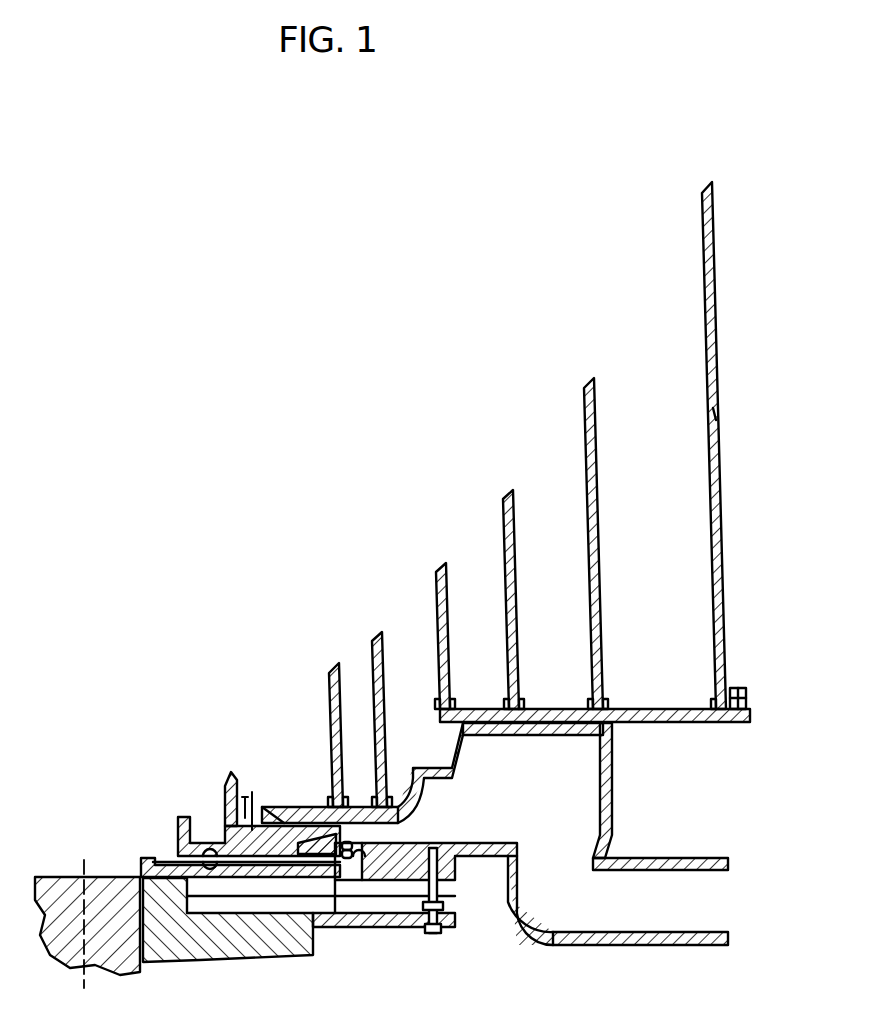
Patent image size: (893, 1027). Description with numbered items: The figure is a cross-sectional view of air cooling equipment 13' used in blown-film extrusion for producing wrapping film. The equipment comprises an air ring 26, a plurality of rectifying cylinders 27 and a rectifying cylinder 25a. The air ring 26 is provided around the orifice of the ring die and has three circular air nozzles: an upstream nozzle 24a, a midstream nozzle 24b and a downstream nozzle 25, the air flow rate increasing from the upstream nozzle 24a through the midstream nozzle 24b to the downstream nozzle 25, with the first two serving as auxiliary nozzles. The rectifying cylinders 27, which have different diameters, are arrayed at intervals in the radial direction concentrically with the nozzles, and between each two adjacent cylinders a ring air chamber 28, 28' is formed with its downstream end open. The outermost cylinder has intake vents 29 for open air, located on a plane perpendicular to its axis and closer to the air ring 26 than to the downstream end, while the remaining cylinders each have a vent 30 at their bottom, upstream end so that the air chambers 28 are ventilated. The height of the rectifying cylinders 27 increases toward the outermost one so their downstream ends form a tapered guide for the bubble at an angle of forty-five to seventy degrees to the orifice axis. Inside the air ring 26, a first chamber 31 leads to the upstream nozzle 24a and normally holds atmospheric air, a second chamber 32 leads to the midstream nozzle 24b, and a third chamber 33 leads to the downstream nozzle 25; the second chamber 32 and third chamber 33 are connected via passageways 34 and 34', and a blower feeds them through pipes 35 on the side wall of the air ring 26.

The air cooling equipment 13' is at (387, 412).
The upstream nozzle 24a is at (150, 872).
The midstream nozzle 24b is at (155, 860).
The downstream nozzle 25 is at (258, 800).
The rectifying cylinder 25a is at (229, 776).
The air ring 26 is at (482, 858).
The rectifying cylinders 27 is at (337, 662).
The ring air chamber 28 is at (591, 592).
The ring air chamber 28' is at (300, 767).
The intake vents 29 is at (714, 414).
The vent 30 is at (612, 697).
The first chamber 31 is at (236, 897).
The second chamber 32 is at (318, 897).
The third chamber 33 is at (507, 803).
The passageway 34 is at (333, 902).
The passageway 34' is at (377, 906).
The pipes 35 is at (668, 858).